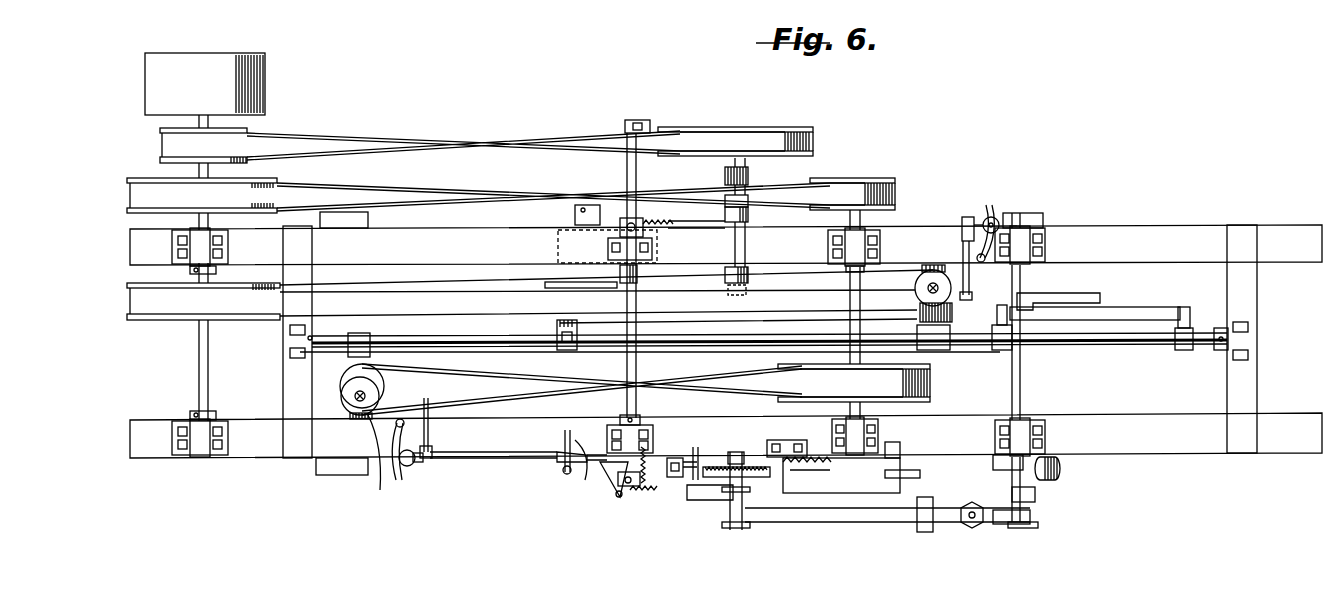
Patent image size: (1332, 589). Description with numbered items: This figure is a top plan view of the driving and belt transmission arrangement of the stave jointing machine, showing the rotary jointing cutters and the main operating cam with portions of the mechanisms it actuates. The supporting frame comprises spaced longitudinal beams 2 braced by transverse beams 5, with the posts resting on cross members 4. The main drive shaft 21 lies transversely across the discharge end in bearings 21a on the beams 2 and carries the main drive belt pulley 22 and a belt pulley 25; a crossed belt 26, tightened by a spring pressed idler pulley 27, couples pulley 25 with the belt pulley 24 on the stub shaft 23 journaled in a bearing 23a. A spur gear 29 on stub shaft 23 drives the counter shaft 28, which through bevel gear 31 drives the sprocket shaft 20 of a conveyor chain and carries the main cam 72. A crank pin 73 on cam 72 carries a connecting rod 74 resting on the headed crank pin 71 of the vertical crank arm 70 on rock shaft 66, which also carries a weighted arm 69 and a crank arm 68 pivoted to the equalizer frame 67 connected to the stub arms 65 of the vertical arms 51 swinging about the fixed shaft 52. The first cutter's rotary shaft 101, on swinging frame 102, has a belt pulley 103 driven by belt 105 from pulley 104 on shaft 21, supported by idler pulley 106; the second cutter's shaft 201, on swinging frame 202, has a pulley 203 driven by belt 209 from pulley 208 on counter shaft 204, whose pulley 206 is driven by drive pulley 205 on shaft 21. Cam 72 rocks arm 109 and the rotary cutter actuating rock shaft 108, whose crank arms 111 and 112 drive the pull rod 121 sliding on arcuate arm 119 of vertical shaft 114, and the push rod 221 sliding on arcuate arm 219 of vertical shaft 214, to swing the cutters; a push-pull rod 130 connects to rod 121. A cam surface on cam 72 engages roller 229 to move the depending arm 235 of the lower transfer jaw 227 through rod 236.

The longitudinal beam 2 is at (1310, 255).
The cross member 4 is at (1043, 214).
The transverse beam 5 is at (295, 394).
The sprocket shaft 20 is at (492, 187).
The main drive shaft 21 is at (198, 381).
The bearing 21a is at (226, 420).
The main drive belt pulley 22 is at (250, 77).
The stub shaft 23 is at (744, 160).
The bearing 23a is at (750, 214).
The belt pulley 24 is at (800, 127).
The belt pulley 25 is at (248, 130).
The crossed belt 26 is at (345, 136).
The spring pressed idler pulley 27 is at (652, 128).
The counter shaft 28 is at (740, 453).
The spur gear 29 is at (724, 176).
The bevel gear 31 is at (770, 477).
The vertical arm 51 is at (1185, 352).
The fixed shaft 52 is at (340, 336).
The stub arm 65 is at (1185, 307).
The rock shaft 66 is at (1022, 405).
The equalizer frame 67 is at (1115, 312).
The crank arm 68 is at (1078, 298).
The weighted arm 69 is at (1055, 480).
The vertical crank arm 70 is at (1030, 497).
The headed crank pin 71 is at (1022, 528).
The main cam 72 is at (713, 503).
The crank pin 73 is at (742, 528).
The connecting rod 74 is at (877, 513).
The rotary shaft 101 is at (934, 264).
The swinging frame 102 is at (944, 265).
The belt pulley 103 is at (930, 285).
The pulley 104 is at (142, 322).
The driving belt 105 is at (490, 305).
The idler pulley 106 is at (567, 283).
The rotary cutter actuating rock shaft 108 is at (640, 283).
The rock arm 109 is at (670, 482).
The crank arm 111 is at (625, 219).
The crank arm 112 is at (615, 500).
The vertical shaft 114 is at (970, 293).
The arcuate arm 119 is at (992, 212).
The pull rod 121 is at (815, 229).
The push-pull rod 130 is at (953, 305).
The shaft 201 is at (398, 394).
The swinging frame 202 is at (384, 471).
The pulley 203 is at (348, 410).
The counter shaft 204 is at (847, 352).
The drive pulley 205 is at (300, 176).
The pulley 206 is at (893, 170).
The pulley 208 is at (913, 400).
The belt 209 is at (515, 382).
The vertical shaft 214 is at (432, 433).
The arcuate arm 219 is at (404, 480).
The push rod 221 is at (530, 461).
The lower transfer jaw 227 is at (590, 468).
The roller 229 is at (696, 467).
The depending arm 235 is at (652, 497).
The rod 236 is at (572, 476).